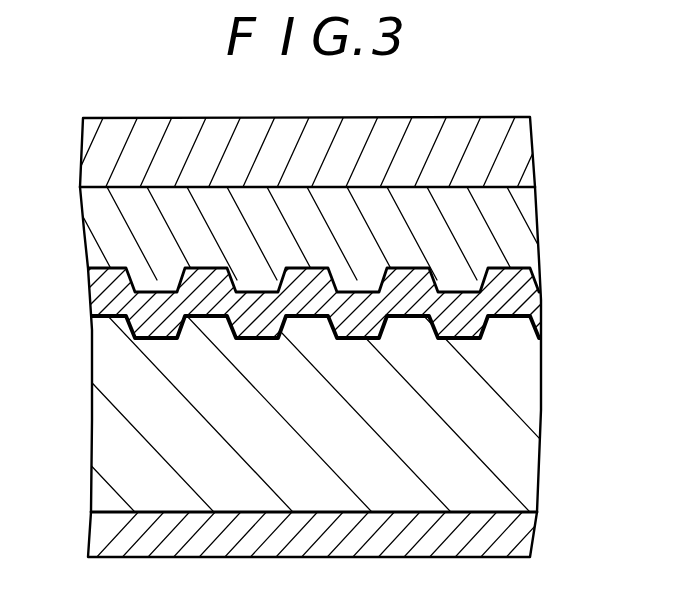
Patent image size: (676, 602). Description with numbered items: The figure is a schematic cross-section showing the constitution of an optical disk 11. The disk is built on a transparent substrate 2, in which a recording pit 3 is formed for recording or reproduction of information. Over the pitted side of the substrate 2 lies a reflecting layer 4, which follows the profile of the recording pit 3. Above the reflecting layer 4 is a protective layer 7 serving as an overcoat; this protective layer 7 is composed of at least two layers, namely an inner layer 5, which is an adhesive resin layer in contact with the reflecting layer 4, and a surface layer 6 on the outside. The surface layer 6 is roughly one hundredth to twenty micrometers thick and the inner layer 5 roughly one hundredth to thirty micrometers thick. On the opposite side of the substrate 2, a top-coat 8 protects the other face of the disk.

The optical disk 11 is at (58, 175).
The transparent substrate 2 is at (513, 392).
The recording pit 3 is at (538, 326).
The reflecting layer 4 is at (515, 290).
The inner layer 5 is at (487, 220).
The surface layer 6 is at (502, 157).
The protective layer 7 is at (600, 122).
The top-coat 8 is at (508, 535).